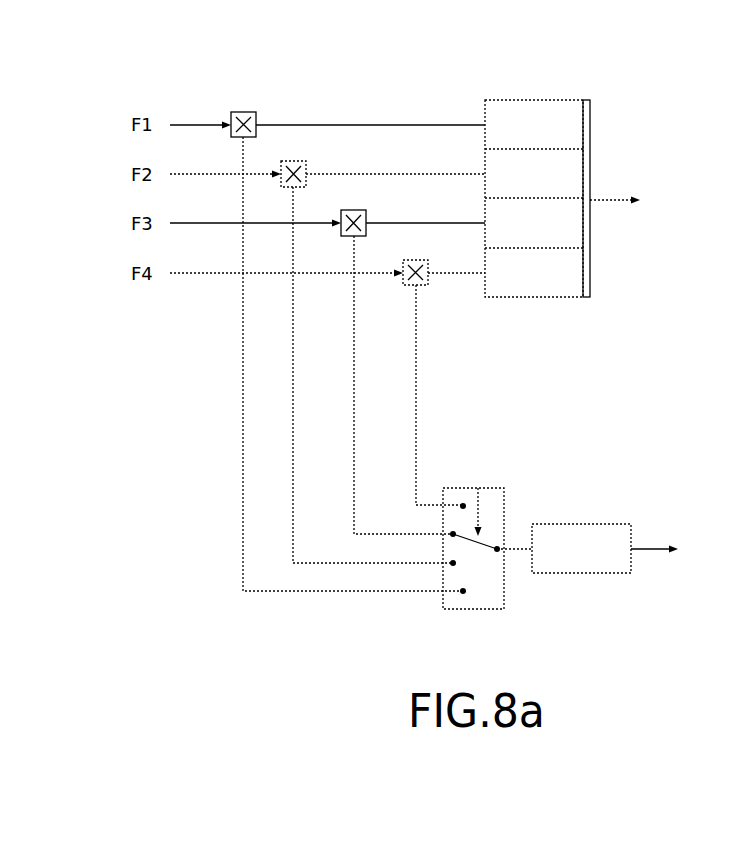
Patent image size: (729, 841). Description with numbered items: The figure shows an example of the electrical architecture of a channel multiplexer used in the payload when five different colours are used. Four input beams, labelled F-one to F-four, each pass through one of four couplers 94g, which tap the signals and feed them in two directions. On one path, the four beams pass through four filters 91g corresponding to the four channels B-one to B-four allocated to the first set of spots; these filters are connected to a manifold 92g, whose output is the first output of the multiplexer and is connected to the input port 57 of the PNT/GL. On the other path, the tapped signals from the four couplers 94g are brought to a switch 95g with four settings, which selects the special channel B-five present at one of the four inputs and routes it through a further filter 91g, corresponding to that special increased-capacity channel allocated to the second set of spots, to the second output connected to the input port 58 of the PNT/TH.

The couplers 94g is at (245, 112).
The filters 91g is at (513, 100).
The manifold 92g is at (590, 125).
The input port 57 is at (608, 203).
The switch 95g is at (495, 488).
The input port 58 is at (642, 552).